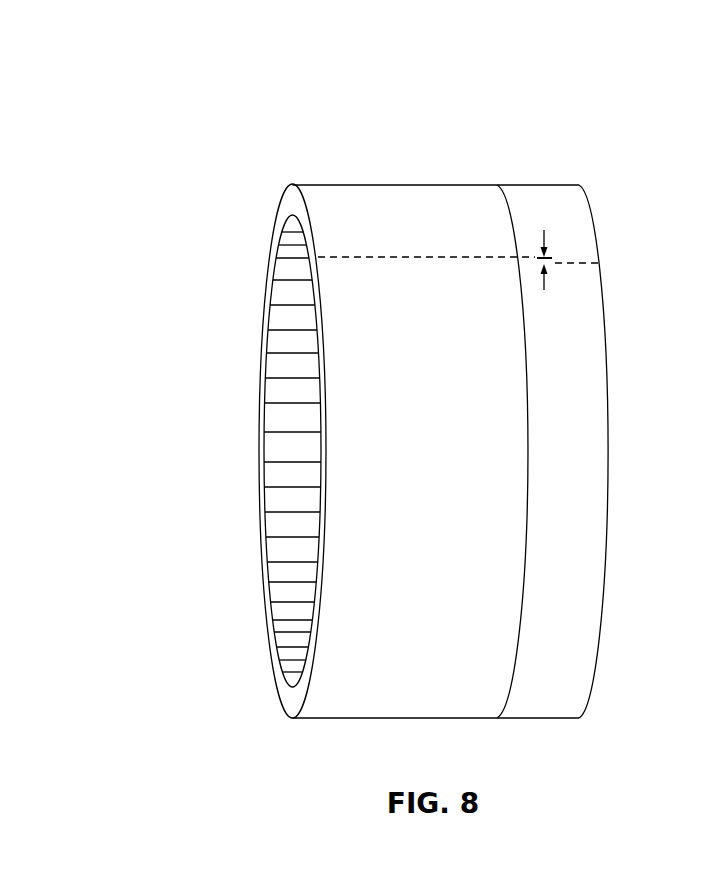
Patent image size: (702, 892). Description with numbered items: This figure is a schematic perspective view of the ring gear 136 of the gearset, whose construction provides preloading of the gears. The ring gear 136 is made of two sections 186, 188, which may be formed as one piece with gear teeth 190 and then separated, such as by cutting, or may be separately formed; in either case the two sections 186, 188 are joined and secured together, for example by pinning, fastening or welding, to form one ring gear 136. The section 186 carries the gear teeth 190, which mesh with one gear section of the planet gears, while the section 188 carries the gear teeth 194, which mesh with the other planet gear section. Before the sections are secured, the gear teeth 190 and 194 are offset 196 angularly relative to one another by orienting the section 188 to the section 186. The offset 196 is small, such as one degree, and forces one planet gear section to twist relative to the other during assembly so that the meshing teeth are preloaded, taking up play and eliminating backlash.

The ring gear 136 is at (553, 86).
The section 186 is at (343, 198).
The section 188 is at (541, 190).
The gear teeth 190 is at (423, 257).
The gear teeth 194 is at (575, 263).
The offset 196 is at (547, 238).